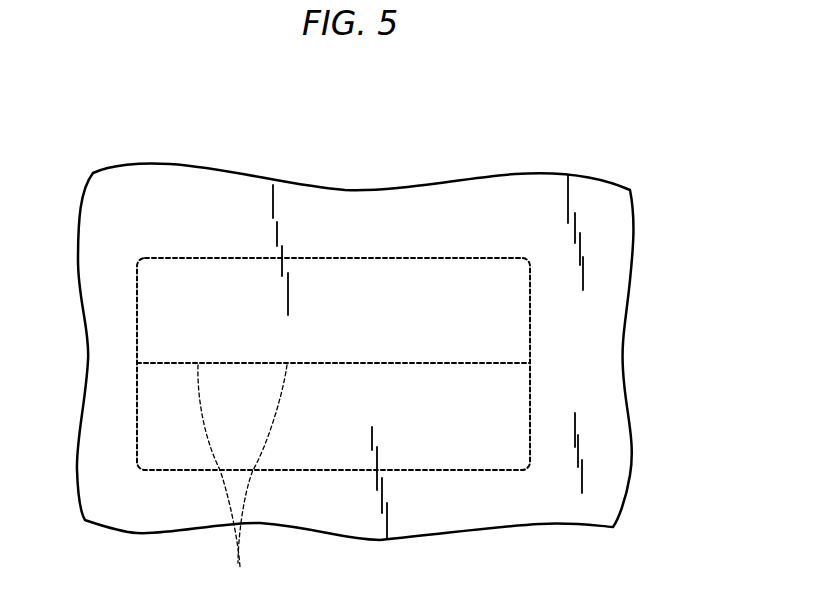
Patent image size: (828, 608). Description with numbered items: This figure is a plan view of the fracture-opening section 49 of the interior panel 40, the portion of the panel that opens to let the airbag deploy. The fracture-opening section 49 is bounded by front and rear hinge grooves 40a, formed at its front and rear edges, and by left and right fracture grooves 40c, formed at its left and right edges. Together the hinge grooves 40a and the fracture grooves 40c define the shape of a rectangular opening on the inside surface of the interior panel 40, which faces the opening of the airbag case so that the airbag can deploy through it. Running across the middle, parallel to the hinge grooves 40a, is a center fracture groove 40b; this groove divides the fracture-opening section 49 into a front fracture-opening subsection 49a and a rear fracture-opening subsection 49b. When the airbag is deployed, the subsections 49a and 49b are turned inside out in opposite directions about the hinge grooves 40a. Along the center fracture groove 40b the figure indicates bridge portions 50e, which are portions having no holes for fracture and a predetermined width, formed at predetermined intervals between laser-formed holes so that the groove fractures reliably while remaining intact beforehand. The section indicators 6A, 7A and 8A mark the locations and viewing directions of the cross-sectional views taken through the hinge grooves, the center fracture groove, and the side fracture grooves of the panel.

The interior panel 40 is at (518, 170).
The hinge grooves 40a is at (213, 257).
The center fracture groove 40b is at (327, 365).
The fracture grooves 40c is at (137, 400).
The fracture-opening section 49 is at (287, 102).
The front fracture-opening subsection 49a is at (313, 283).
The rear fracture-opening subsection 49b is at (392, 387).
The bridge portions 50e is at (468, 365).
The section line 6A is at (277, 267).
The section line 7A is at (278, 373).
The section line 8A is at (525, 338).